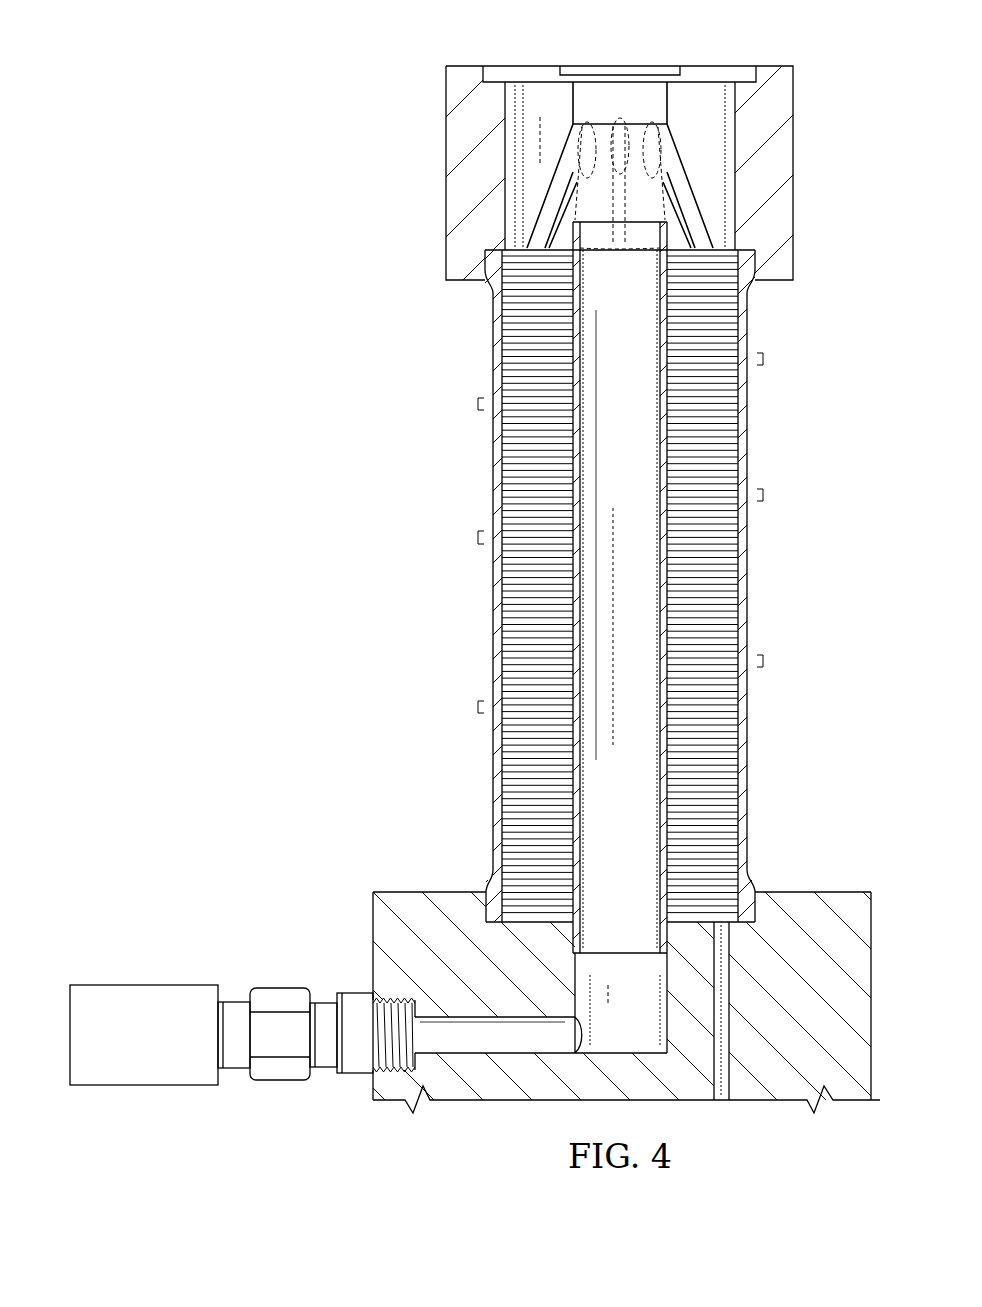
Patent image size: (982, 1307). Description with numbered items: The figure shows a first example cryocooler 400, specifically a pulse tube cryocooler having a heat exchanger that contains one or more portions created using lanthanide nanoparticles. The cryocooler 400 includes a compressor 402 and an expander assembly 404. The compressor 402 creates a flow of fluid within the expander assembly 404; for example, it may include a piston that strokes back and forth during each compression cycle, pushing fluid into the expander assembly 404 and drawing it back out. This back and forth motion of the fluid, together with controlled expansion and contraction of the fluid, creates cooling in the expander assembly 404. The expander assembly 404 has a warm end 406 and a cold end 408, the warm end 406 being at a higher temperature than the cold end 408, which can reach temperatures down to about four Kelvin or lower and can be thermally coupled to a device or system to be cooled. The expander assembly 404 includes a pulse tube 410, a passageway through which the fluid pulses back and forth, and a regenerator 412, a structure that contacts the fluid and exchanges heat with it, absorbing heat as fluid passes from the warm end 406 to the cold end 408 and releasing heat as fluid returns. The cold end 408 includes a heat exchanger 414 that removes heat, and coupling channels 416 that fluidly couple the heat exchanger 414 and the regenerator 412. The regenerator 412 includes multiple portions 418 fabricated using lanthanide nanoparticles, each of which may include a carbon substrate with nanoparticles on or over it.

The cryocooler 400 is at (366, 55).
The compressor 402 is at (142, 1085).
The expander assembly 404 is at (466, 477).
The warm end 406 is at (772, 860).
The cold end 408 is at (530, 66).
The pulse tube 410 is at (489, 778).
The regenerator 412 is at (500, 815).
The heat exchanger 414 is at (635, 140).
The coupling channels 416 is at (700, 207).
The portions 418 is at (621, 533).